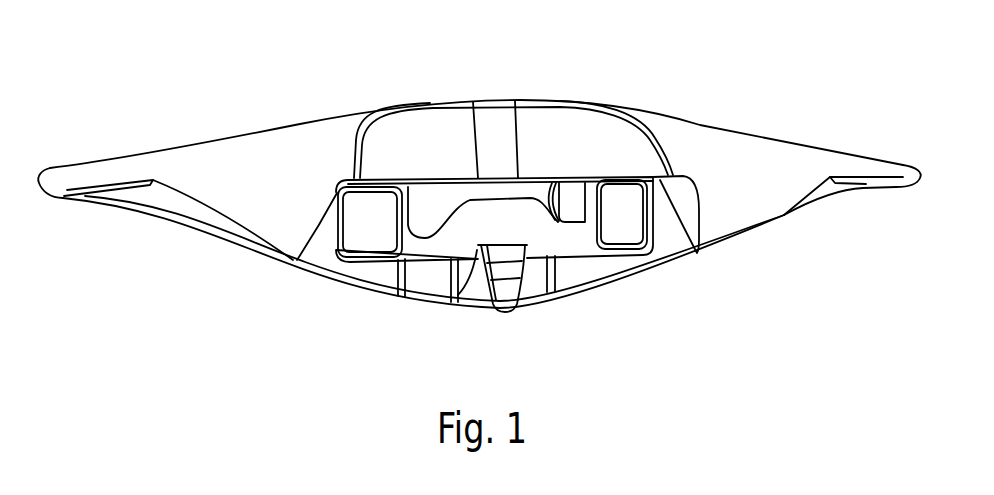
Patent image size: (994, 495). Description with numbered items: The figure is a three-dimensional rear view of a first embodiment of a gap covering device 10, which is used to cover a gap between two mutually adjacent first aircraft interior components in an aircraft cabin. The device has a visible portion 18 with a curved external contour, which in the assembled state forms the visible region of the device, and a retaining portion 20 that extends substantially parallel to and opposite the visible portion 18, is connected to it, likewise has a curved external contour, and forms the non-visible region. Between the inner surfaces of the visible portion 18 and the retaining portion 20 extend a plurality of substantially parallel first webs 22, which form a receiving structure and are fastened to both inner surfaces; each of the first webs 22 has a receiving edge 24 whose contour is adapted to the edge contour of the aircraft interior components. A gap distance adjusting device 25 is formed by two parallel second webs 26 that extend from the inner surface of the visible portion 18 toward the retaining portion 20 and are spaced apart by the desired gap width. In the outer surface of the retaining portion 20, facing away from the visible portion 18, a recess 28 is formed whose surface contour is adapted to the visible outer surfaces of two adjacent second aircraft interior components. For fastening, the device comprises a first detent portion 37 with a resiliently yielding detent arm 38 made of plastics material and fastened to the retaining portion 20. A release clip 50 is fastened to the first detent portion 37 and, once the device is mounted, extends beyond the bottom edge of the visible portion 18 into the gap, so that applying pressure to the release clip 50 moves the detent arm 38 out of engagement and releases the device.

The gap covering device 10 is at (479, 197).
The visible portion 18 is at (573, 273).
The retaining portion 20 is at (226, 158).
The first webs 22 is at (544, 188).
The receiving edge 24 is at (553, 198).
The gap distance adjusting device 25 is at (431, 285).
The second webs 26 is at (448, 298).
The recess 28 is at (389, 137).
The first detent portion 37 is at (326, 266).
The resiliently yielding detent arm 38 is at (422, 240).
The release clip 50 is at (506, 300).